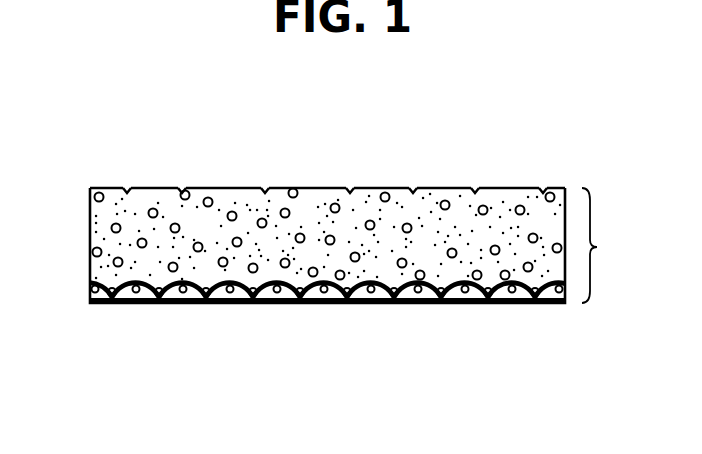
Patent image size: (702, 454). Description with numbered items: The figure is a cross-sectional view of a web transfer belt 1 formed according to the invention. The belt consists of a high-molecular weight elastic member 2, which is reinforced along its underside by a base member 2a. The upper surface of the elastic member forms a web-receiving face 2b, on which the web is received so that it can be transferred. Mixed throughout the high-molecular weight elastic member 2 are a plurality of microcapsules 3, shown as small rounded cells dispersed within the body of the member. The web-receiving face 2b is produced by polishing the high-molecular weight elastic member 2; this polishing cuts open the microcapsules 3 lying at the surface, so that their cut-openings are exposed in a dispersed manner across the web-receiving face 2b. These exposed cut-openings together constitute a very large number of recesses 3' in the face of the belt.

The web transfer belt 1 is at (556, 188).
The high-molecular weight elastic member 2 is at (361, 245).
The base member 2a is at (482, 305).
The web-receiving face 2b is at (443, 187).
The microcapsules 3 is at (296, 200).
The recesses 3' is at (333, 156).